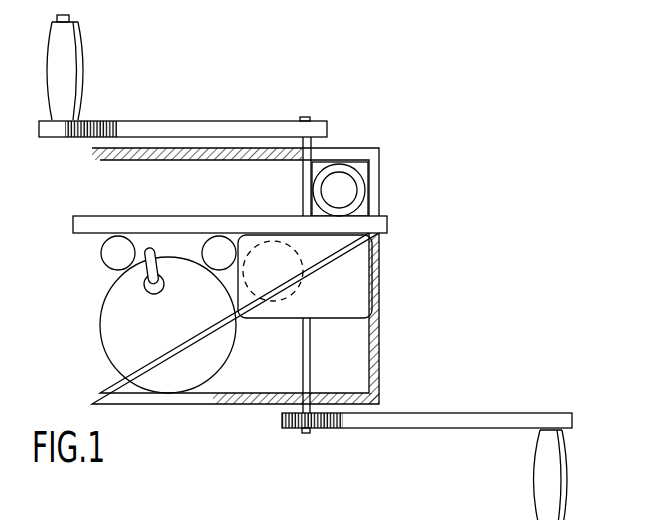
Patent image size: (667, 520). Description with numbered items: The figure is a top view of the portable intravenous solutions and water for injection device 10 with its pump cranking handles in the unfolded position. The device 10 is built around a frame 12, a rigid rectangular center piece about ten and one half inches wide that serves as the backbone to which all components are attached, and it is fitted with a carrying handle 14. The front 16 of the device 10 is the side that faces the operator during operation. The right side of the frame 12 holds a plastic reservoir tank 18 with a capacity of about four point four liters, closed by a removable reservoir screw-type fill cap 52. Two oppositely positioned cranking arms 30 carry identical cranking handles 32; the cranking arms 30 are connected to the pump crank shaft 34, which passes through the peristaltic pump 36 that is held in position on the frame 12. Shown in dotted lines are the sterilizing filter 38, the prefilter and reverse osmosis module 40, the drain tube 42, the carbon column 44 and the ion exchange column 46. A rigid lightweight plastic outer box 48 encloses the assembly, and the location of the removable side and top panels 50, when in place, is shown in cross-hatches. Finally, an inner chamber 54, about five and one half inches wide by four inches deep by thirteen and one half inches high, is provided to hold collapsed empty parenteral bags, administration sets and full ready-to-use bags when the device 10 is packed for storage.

The portable intravenous solutions and water for injection device 10 is at (286, 94).
The frame 12 is at (343, 244).
The carrying handle 14 is at (385, 228).
The front 16 is at (467, 305).
The reservoir tank 18 is at (210, 205).
The cranking arms 30 is at (207, 128).
The cranking handles 32 is at (68, 62).
The pump crank shaft 34 is at (304, 182).
The peristaltic pump 36 is at (340, 293).
The sterilizing filter 38 is at (273, 283).
The prefilter and reverse osmosis module 40 is at (168, 355).
The drain tube 42 is at (147, 257).
The carbon column 44 is at (112, 258).
The ion exchange column 46 is at (218, 265).
The outer box 48 is at (95, 188).
The removable side and top panels 50 is at (380, 369).
The reservoir screw-type fill cap 52 is at (343, 193).
The inner chamber 54 is at (260, 376).